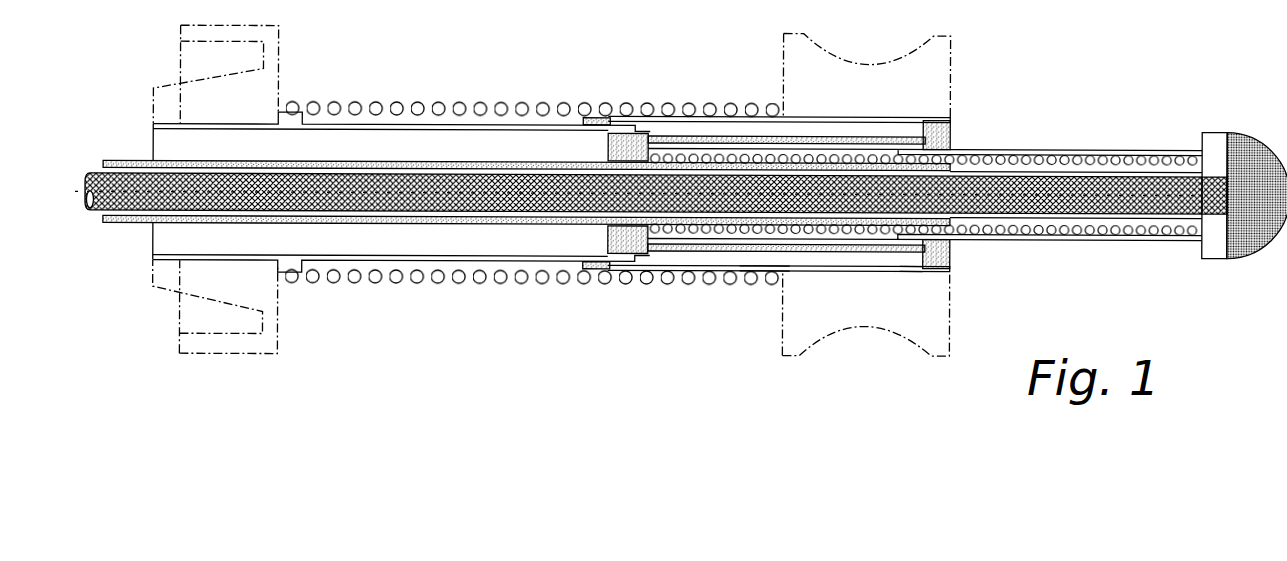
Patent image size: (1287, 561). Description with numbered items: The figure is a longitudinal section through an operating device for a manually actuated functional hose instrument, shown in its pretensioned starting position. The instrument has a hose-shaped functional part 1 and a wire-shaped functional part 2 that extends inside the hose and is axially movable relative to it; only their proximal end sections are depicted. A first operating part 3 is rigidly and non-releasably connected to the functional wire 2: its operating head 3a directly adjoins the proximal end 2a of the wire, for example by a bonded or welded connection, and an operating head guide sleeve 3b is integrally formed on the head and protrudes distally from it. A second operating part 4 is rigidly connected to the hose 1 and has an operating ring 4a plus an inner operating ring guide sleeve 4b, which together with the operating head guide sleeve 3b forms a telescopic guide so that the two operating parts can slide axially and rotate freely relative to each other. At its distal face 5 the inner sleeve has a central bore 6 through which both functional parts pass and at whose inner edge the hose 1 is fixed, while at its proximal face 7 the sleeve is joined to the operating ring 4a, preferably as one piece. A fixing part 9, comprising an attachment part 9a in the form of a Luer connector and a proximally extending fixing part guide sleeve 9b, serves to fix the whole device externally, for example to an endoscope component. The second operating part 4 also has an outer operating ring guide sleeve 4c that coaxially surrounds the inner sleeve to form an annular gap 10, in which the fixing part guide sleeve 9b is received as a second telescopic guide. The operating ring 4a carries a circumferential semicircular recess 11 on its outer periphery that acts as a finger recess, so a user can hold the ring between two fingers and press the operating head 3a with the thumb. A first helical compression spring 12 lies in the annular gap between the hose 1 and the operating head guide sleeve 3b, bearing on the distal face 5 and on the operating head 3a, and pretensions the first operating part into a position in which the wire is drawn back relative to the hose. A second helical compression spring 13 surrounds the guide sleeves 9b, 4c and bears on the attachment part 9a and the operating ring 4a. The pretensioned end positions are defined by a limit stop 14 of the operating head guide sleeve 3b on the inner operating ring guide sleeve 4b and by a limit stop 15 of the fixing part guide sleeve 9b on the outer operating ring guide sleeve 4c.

The hose-shaped functional part 1 is at (527, 133).
The wire-shaped functional part 2 is at (650, 254).
The proximal end of the functional wire 2a is at (1220, 144).
The first operating part 3 is at (1185, 155).
The operating head 3a is at (1250, 234).
The operating head guide sleeve 3b is at (925, 255).
The second operating part 4 is at (779, 141).
The operating ring 4a is at (971, 93).
The operating ring guide sleeve 4b is at (785, 301).
The outer operating ring guide sleeve 4c is at (764, 338).
The distal face 5 is at (629, 92).
The central bore 6 is at (633, 273).
The proximal face 7 is at (962, 275).
The fixing part 9 is at (402, 136).
The attachment part 9a is at (235, 340).
The fixing part guide sleeve 9b is at (536, 70).
The annular gap 10 is at (786, 263).
The recess 11 is at (866, 204).
The first helical compression spring 12 is at (925, 132).
The second helical compression spring 13 is at (535, 314).
The limit stop 14 is at (943, 320).
The limit stop 15 is at (596, 321).